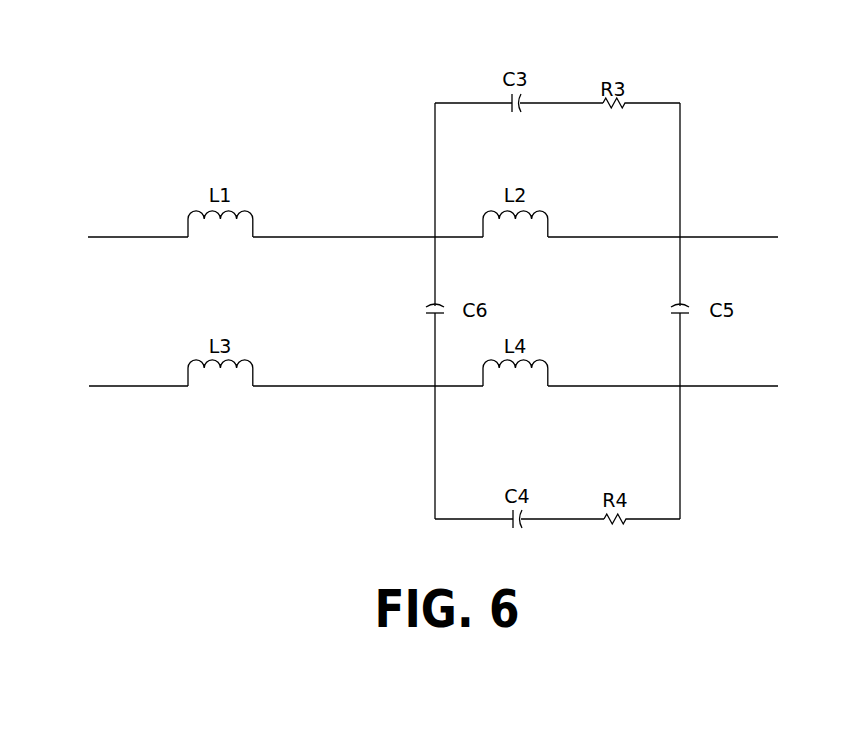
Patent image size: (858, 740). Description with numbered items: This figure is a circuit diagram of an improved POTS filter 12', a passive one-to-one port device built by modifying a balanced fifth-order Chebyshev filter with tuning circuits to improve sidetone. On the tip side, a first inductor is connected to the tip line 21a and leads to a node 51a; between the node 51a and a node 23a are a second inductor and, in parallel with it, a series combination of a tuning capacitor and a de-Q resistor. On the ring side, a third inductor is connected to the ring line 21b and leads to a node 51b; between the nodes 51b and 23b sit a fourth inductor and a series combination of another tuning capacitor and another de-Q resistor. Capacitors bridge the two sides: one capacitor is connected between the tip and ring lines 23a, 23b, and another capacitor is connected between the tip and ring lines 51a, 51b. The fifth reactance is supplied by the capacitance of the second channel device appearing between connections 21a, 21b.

The improved POTS filter 12' is at (433, 260).
The tip line 21a is at (155, 238).
The ring line 21b is at (157, 387).
The node 23a is at (696, 238).
The node 23b is at (696, 387).
The node 51a is at (435, 238).
The node 51b is at (435, 387).